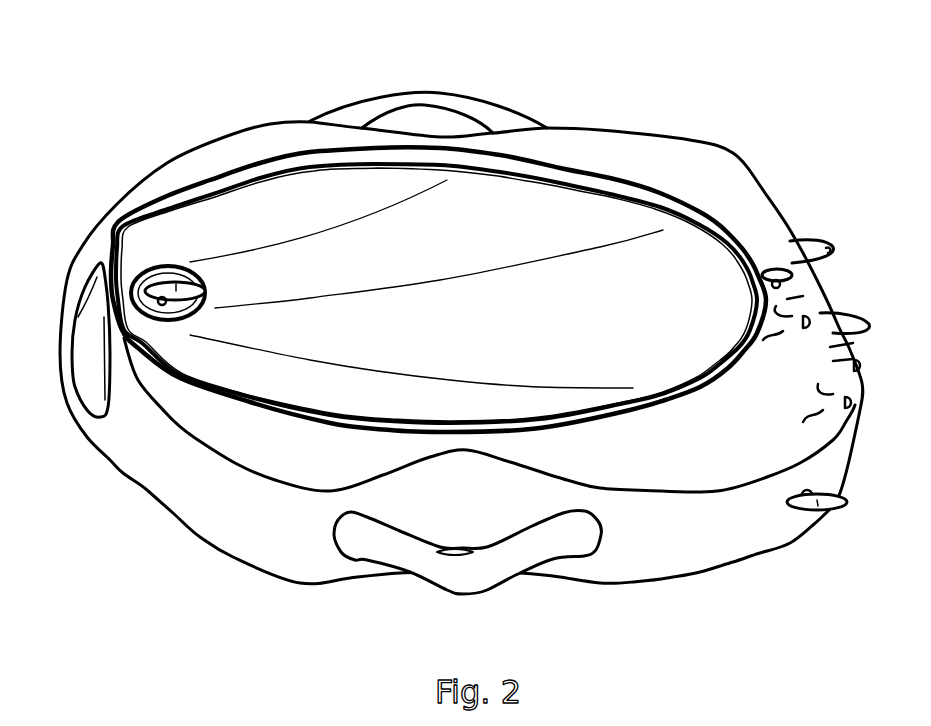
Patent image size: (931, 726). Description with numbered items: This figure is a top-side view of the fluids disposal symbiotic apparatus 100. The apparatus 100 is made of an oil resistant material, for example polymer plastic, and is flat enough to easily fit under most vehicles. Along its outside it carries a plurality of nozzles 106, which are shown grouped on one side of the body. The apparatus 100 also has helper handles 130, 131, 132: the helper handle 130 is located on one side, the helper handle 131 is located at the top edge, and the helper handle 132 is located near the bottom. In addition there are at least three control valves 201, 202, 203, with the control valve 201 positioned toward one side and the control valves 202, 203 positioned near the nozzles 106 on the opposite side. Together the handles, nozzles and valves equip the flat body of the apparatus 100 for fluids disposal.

The fluids disposal symbiotic apparatus 100 is at (720, 165).
The helper handle 131 is at (430, 97).
The helper handle 130 is at (62, 343).
The control valve 201 is at (173, 272).
The helper handle 132 is at (462, 572).
The control valve 202 is at (817, 510).
The control valve 203 is at (778, 266).
The nozzles 106 is at (868, 322).